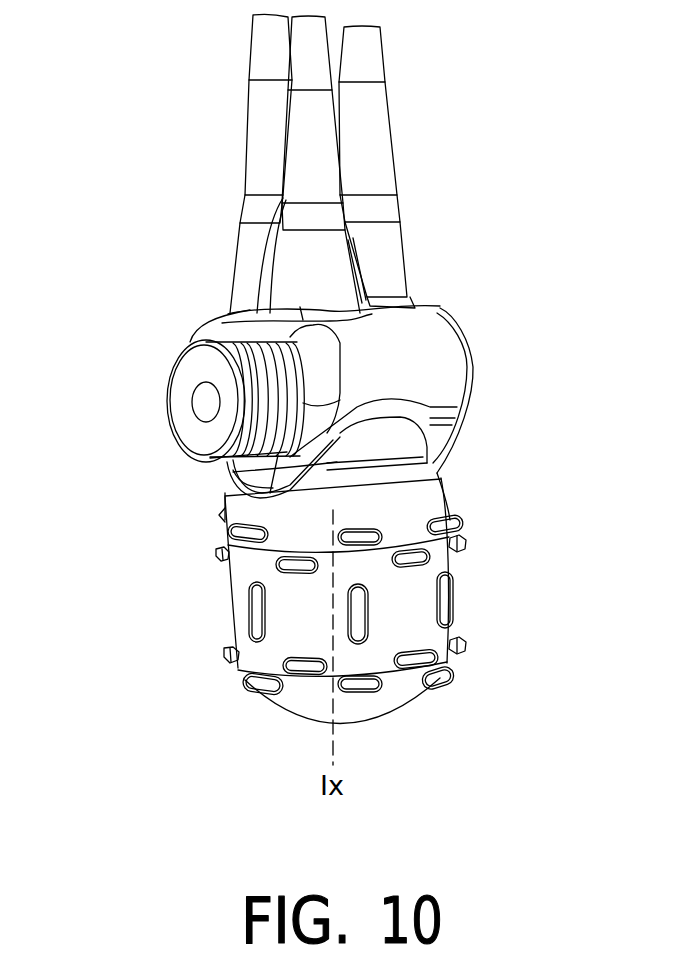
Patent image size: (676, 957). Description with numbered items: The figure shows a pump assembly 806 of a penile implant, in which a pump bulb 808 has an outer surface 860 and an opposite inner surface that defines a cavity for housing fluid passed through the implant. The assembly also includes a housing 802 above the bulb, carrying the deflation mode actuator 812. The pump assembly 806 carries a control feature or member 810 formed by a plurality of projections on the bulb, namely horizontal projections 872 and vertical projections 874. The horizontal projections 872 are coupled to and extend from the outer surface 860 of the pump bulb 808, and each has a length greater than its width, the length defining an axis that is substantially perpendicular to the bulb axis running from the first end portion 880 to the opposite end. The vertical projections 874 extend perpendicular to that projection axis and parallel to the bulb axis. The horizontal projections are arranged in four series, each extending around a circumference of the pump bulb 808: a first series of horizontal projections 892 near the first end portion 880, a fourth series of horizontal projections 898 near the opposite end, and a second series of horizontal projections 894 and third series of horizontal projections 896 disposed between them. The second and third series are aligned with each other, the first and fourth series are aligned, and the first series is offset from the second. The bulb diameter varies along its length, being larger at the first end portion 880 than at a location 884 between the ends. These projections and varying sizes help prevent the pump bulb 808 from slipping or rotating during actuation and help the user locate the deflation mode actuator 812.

The pump assembly 806 is at (113, 323).
The deflation mode actuator 812 is at (205, 405).
The housing 802 is at (400, 433).
The outer surface 860 is at (422, 500).
The pump bulb 808 is at (228, 576).
The fourth series of horizontal projections 898 is at (216, 514).
The third series of horizontal projections 896 is at (215, 551).
The second series of horizontal projections 894 is at (228, 652).
The vertical projections 874 is at (453, 588).
The location 884 is at (450, 605).
The horizontal projections 872 is at (467, 648).
The first series of horizontal projections 892 is at (243, 686).
The control feature or member 810 is at (395, 682).
The first end portion 880 is at (377, 720).